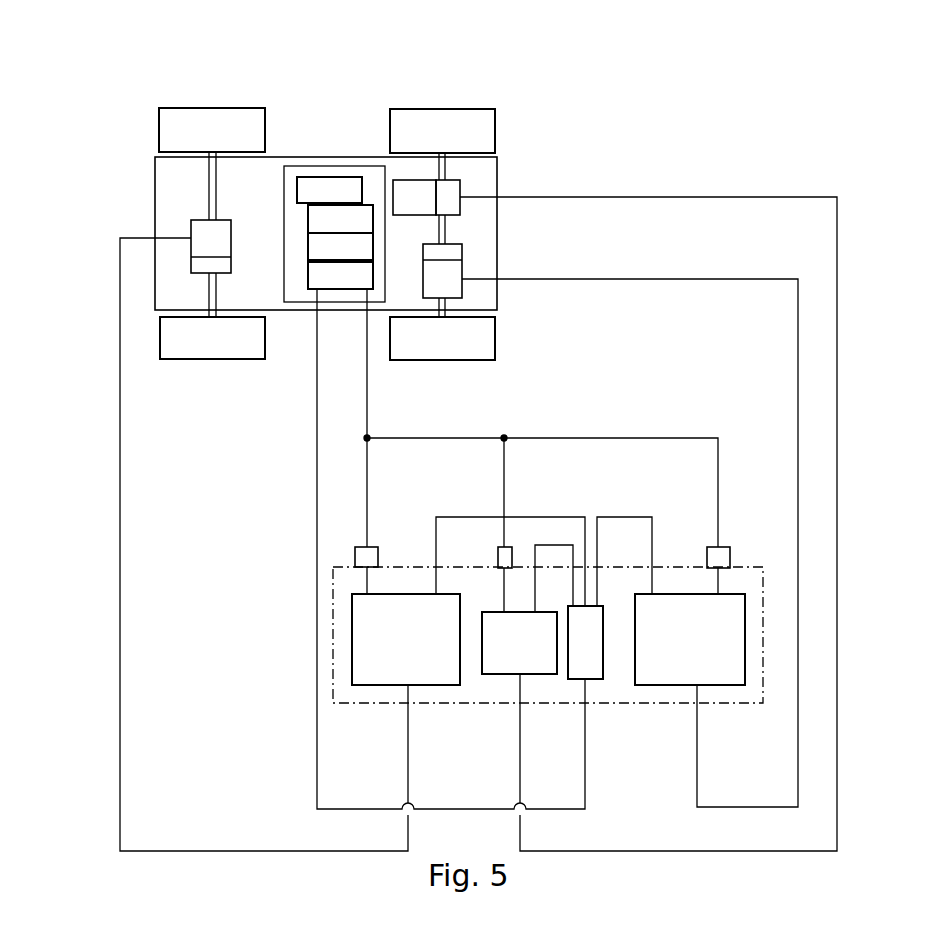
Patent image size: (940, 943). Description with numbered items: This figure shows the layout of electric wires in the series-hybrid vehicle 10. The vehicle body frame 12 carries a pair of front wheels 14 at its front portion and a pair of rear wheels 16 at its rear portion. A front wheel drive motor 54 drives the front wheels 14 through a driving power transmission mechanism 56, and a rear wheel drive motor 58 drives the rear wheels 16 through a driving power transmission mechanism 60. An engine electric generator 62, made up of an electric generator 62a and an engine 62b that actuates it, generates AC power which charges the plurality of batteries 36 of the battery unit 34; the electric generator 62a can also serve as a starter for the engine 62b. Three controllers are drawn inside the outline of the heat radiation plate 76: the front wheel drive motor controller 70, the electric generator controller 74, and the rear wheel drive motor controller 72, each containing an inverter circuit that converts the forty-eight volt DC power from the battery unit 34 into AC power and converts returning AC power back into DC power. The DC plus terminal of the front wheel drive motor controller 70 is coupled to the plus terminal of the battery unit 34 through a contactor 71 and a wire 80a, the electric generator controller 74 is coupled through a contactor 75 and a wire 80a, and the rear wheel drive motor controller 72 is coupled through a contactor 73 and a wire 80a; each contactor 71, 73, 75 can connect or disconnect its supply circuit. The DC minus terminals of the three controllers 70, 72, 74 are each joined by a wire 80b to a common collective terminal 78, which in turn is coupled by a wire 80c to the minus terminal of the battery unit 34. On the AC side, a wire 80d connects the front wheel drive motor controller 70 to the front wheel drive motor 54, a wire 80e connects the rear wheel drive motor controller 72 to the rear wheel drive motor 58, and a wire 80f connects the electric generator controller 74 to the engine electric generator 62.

The hybrid vehicle 10 is at (114, 106).
The vehicle body frame 12 is at (153, 168).
The front wheels 14 is at (216, 118).
The rear wheels 16 is at (450, 118).
The battery unit 34 is at (348, 177).
The batteries 36 is at (322, 190).
The front wheel drive motor 54 is at (195, 228).
The driving power transmission mechanism 56 is at (197, 264).
The rear wheel drive motor 58 is at (445, 284).
The driving power transmission mechanism 60 is at (450, 252).
The engine electric generator 62 is at (472, 173).
The electric generator 62a is at (448, 195).
The engine 62b is at (400, 193).
The front wheel drive motor controller 70 is at (373, 673).
The contactor 71 is at (355, 557).
The rear wheel drive motor controller 72 is at (660, 680).
The contactor 73 is at (740, 555).
The electric generator controller 74 is at (500, 665).
The contactor 75 is at (497, 557).
The heat radiation plate 76 is at (690, 567).
The collective terminal 78 is at (590, 652).
The wire 80a is at (367, 530).
The wire 80b is at (462, 517).
The wire 80c is at (317, 483).
The wire 80d is at (197, 851).
The wire 80e is at (797, 343).
The wire 80f is at (837, 387).